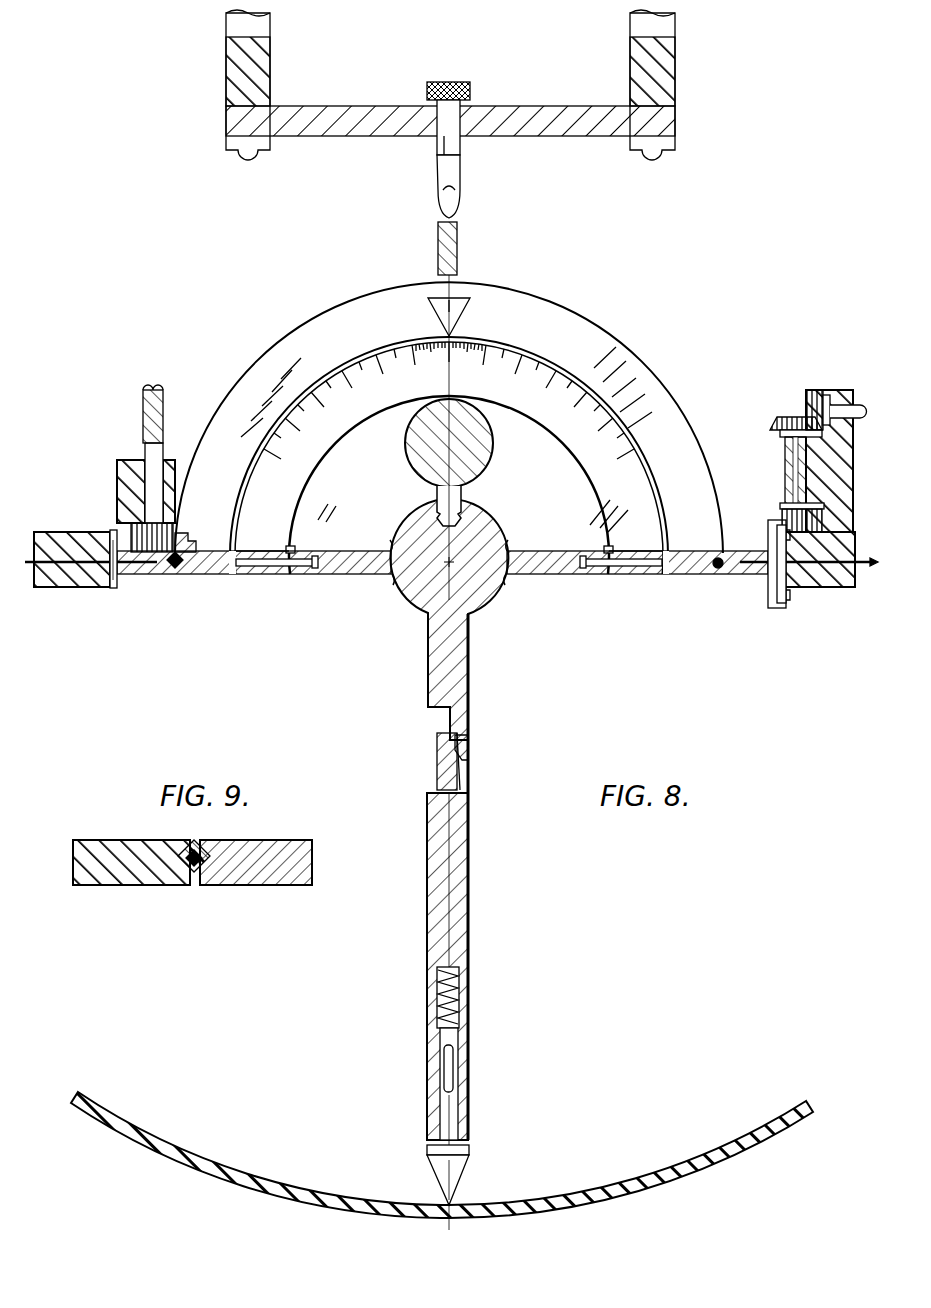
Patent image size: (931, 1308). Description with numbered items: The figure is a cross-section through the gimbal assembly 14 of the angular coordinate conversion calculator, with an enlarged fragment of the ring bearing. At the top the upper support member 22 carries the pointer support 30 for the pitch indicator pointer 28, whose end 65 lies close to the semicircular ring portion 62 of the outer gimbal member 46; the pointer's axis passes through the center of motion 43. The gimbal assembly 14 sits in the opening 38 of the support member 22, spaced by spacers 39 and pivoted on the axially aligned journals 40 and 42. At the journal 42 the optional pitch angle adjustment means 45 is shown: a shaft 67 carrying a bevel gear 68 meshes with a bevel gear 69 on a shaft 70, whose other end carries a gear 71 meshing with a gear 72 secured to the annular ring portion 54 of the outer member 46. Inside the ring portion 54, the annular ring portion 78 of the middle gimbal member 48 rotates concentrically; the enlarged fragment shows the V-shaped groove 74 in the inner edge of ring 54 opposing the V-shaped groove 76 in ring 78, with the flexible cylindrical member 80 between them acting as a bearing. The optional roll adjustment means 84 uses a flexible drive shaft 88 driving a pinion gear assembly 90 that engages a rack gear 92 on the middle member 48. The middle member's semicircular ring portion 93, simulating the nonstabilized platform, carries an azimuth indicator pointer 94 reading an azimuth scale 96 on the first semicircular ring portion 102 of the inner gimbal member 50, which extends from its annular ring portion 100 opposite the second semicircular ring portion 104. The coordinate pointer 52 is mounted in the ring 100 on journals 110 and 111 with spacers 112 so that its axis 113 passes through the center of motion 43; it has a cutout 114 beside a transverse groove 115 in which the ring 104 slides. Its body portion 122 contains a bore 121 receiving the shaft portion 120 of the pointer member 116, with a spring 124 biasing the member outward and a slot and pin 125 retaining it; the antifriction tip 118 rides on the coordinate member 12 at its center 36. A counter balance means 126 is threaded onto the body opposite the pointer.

In FIG. 8, the coordinate member 12 is at (182, 1104).
In FIG. 8, the gimbal assembly 14 is at (346, 680).
In FIG. 8, the upper support member 22 is at (40, 530).
In FIG. 8, the pitch indicator pointer 28 is at (438, 166).
In FIG. 8, the pointer support 30 is at (520, 118).
In FIG. 8, the center of the coordinate member 36 is at (442, 1214).
In FIG. 8, the opening 38 is at (112, 532).
In FIG. 8, the spacers 39 is at (112, 578).
In FIG. 8, the journal 40 is at (56, 588).
In FIG. 8, the journal 42 is at (815, 590).
In FIG. 8, the center of motion 43 is at (448, 565).
In FIG. 8, the pitch angle adjustment means 45 is at (772, 412).
In FIG. 8, the outer gimbal member 46 is at (137, 590).
In FIG. 8, the middle gimbal member 48 is at (701, 586).
In FIG. 8, the inner gimbal member 50 is at (641, 586).
In FIG. 8, the coordinate pointer 52 is at (482, 678).
In FIG. 8, the annular ring portion 54 is at (748, 576).
In FIG. 9, the annular ring portion 54 is at (288, 887).
In FIG. 8, the semicircular ring portion 62 is at (437, 240).
In FIG. 8, the end of the pitch indicator pointer 65 is at (458, 218).
In FIG. 8, the shaft 67 is at (856, 408).
In FIG. 8, the bevel gear 68 is at (820, 394).
In FIG. 8, the bevel gear 69 is at (790, 416).
In FIG. 8, the shaft 70 is at (790, 460).
In FIG. 8, the gear 71 is at (795, 520).
In FIG. 8, the gear 72 is at (776, 612).
In FIG. 9, the V-shaped groove 74 is at (212, 875).
In FIG. 9, the V-shaped groove 76 is at (182, 872).
In FIG. 8, the annular ring portion 78 is at (218, 576).
In FIG. 9, the annular ring portion 78 is at (95, 887).
In FIG. 8, the flexible cylindrical member 80 is at (178, 576).
In FIG. 9, the flexible cylindrical member 80 is at (192, 878).
In FIG. 8, the roll adjustment means 84 is at (130, 445).
In FIG. 8, the flexible drive shaft 88 is at (165, 396).
In FIG. 8, the pinion gear assembly 90 is at (155, 576).
In FIG. 8, the rack gear 92 is at (186, 534).
In FIG. 8, the semicircular ring portion 93 is at (568, 325).
In FIG. 8, the azimuth indicator pointer 94 is at (460, 302).
In FIG. 8, the azimuth scale 96 is at (512, 370).
In FIG. 8, the annular ring portion 100 is at (255, 576).
In FIG. 8, the first semicircular ring portion 102 is at (598, 400).
In FIG. 8, the second semicircular ring portion 104 is at (436, 762).
In FIG. 8, the journal 110 is at (600, 553).
In FIG. 8, the journal 111 is at (322, 551).
In FIG. 8, the spacers 112 is at (282, 576).
In FIG. 8, the axis of the coordinate pointer 113 is at (432, 850).
In FIG. 8, the cutout 114 is at (470, 742).
In FIG. 8, the transverse channel or groove 115 is at (436, 713).
In FIG. 8, the pointer member 116 is at (470, 1150).
In FIG. 8, the antifriction tip 118 is at (458, 1200).
In FIG. 8, the shaft portion 120 is at (444, 1108).
In FIG. 8, the bore 121 is at (462, 1063).
In FIG. 8, the body portion 122 is at (466, 962).
In FIG. 8, the spring 124 is at (436, 1000).
In FIG. 8, the slot and pin 125 is at (443, 1074).
In FIG. 8, the counter balance means 126 is at (488, 462).